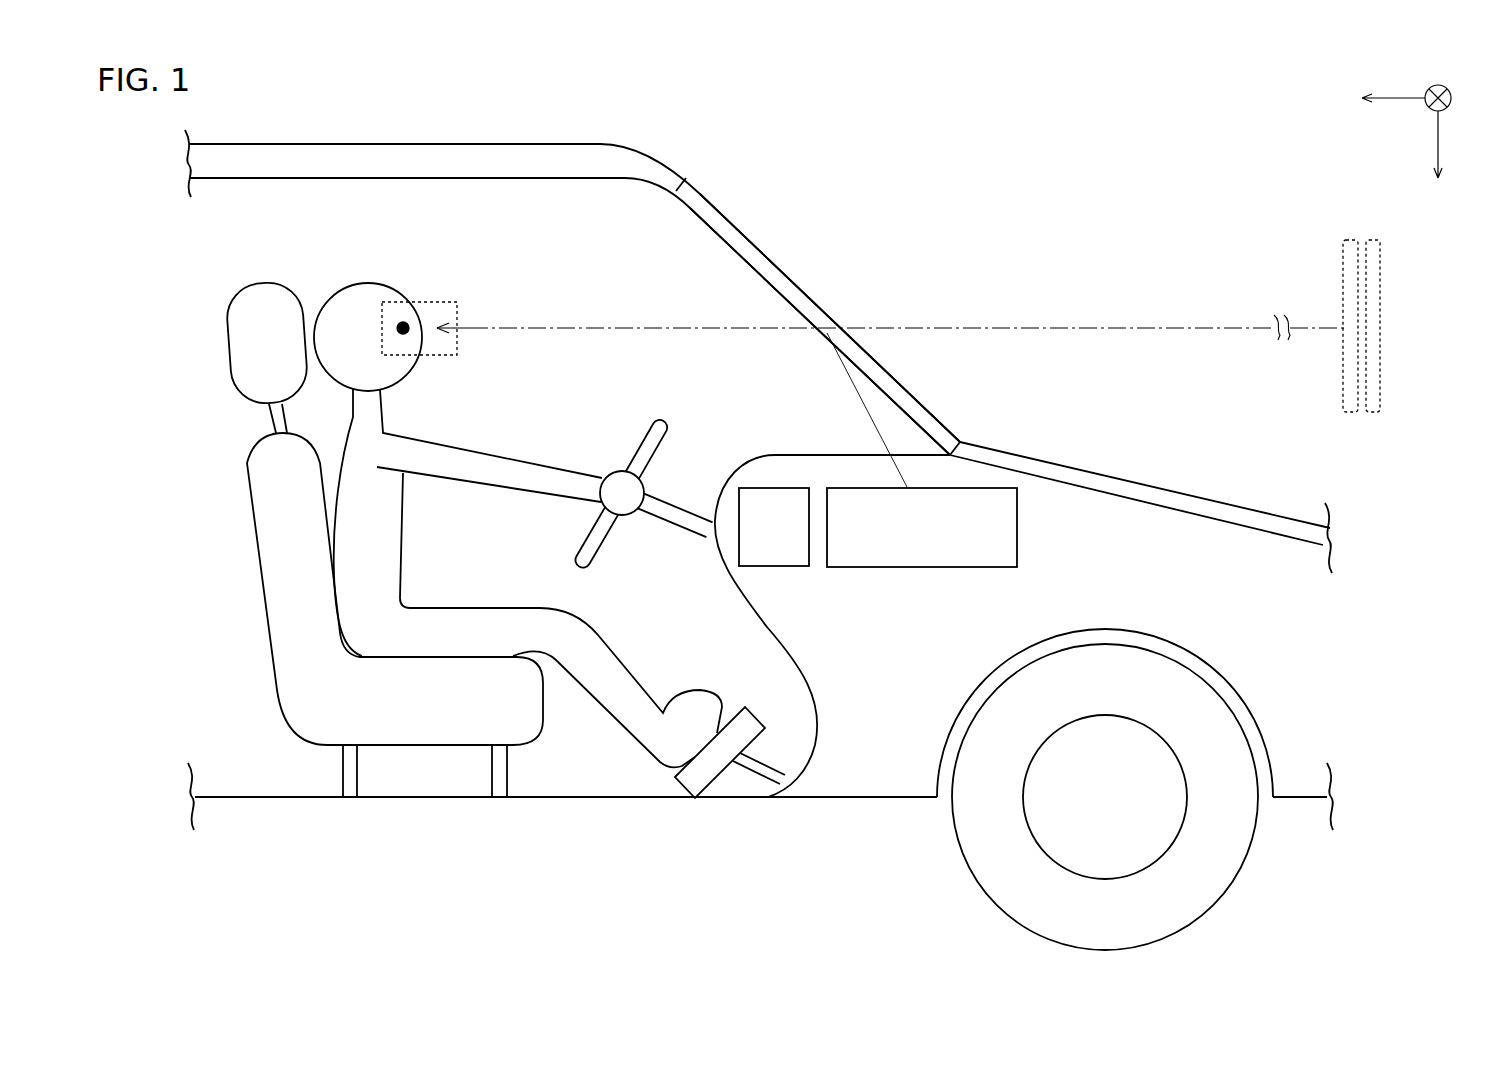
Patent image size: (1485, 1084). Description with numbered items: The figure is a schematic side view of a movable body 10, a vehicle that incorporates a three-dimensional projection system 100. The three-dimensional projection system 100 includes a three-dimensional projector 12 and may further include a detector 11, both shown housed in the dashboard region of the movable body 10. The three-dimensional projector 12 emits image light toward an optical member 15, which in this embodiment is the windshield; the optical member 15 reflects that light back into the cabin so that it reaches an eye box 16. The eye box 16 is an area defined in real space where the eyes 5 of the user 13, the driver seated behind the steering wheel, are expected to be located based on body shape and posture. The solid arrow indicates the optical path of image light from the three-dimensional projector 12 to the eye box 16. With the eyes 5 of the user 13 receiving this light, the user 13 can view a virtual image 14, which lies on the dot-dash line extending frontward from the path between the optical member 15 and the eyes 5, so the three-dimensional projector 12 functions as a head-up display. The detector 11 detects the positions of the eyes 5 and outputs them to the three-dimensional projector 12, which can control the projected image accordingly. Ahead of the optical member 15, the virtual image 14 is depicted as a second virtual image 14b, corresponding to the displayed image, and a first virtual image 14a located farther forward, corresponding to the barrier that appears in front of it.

The movable body 10 is at (293, 124).
The optical member 15 is at (706, 196).
The user 13 is at (378, 283).
The eyes 5 is at (403, 335).
The eye box 16 is at (444, 302).
The detector 11 is at (772, 567).
The 3D projector 12 is at (917, 567).
The 3D projection system 100 is at (947, 626).
The virtual image 14 is at (1438, 471).
The first virtual image 14a is at (1375, 414).
The second virtual image 14b is at (1349, 413).